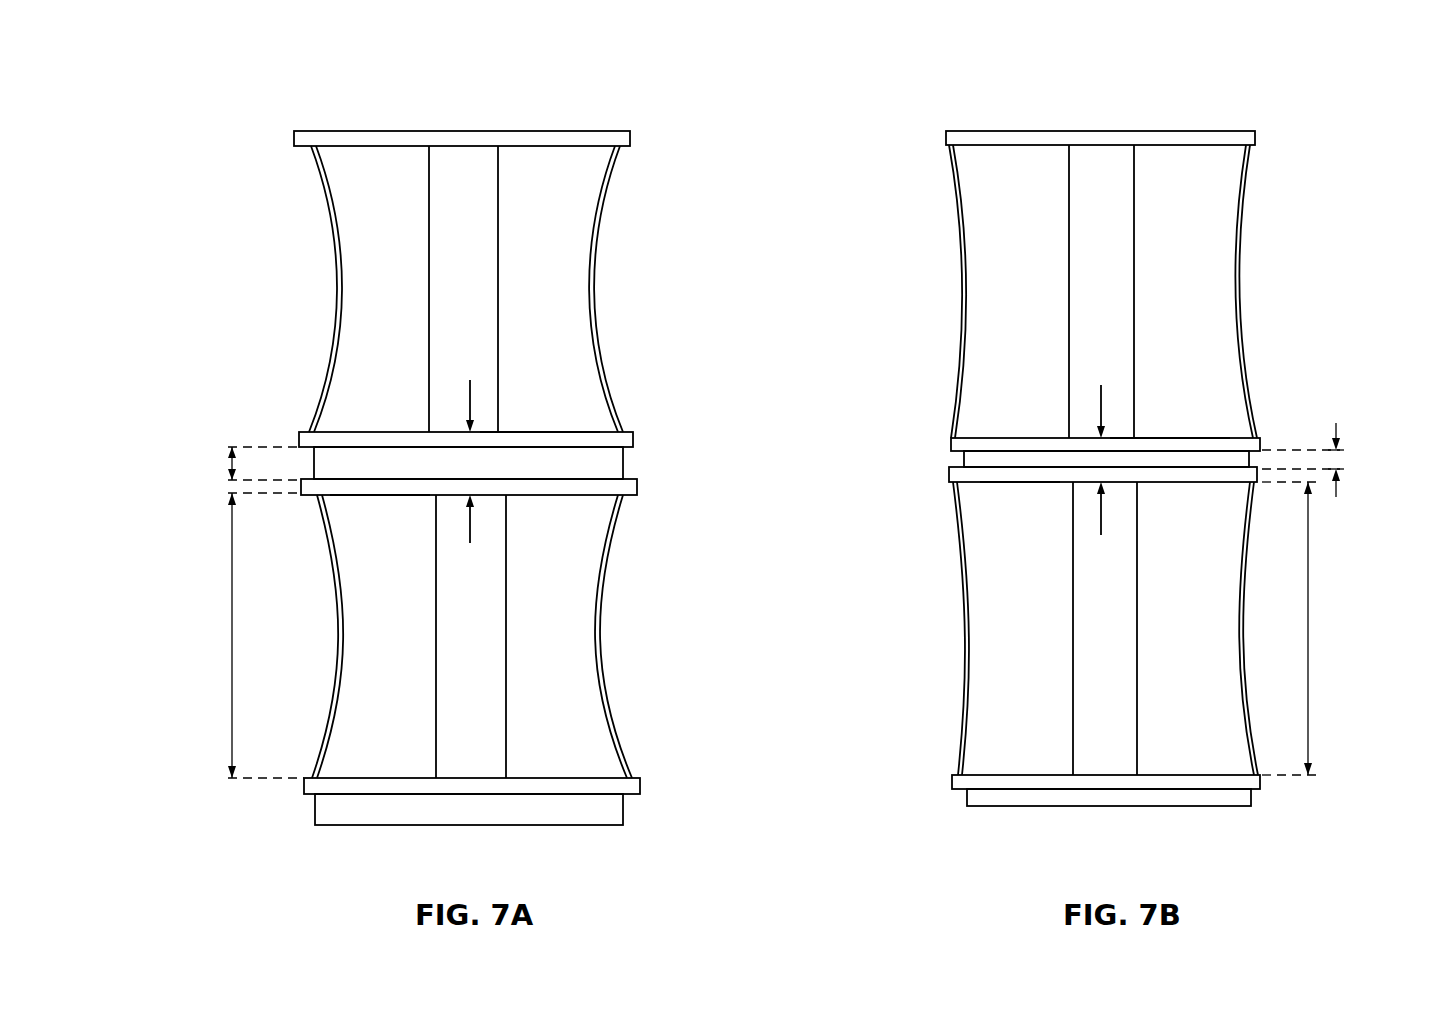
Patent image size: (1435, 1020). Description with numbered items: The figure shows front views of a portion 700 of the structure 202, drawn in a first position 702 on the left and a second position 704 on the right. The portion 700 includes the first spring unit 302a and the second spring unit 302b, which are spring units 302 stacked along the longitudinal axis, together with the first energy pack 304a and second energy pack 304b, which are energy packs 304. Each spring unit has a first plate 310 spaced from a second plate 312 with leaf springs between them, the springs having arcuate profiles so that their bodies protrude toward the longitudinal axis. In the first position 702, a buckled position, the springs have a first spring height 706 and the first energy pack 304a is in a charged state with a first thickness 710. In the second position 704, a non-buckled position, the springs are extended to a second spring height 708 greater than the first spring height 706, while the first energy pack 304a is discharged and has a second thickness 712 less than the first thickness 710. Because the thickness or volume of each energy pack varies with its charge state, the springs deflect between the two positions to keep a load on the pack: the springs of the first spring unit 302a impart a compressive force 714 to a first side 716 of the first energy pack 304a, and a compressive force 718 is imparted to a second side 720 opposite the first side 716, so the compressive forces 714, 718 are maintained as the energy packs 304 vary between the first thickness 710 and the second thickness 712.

In FIG. 7A, the structure 202 is at (484, 432).
In FIG. 7B, the structure 202 is at (1098, 435).
In FIG. 7A, the portion 700 is at (484, 432).
In FIG. 7B, the portion 700 is at (1098, 435).
In FIG. 7A, the first position 702 is at (484, 467).
In FIG. 7B, the second position 704 is at (1098, 469).
In FIG. 7A, the spring units 302 is at (475, 464).
In FIG. 7B, the spring units 302 is at (1062, 446).
In FIG. 7A, the first spring unit 302a is at (436, 464).
In FIG. 7B, the first spring unit 302a is at (1062, 446).
In FIG. 7A, the second spring unit 302b is at (567, 630).
In FIG. 7B, the second spring unit 302b is at (1017, 628).
In FIG. 7A, the energy packs 304 is at (577, 647).
In FIG. 7B, the energy packs 304 is at (1008, 609).
In FIG. 7A, the first energy pack 304a is at (625, 470).
In FIG. 7B, the first energy pack 304a is at (963, 460).
In FIG. 7A, the second energy pack 304b is at (630, 815).
In FIG. 7B, the second energy pack 304b is at (1000, 806).
In FIG. 7A, the first plates 310 is at (630, 137).
In FIG. 7B, the first plates 310 is at (1255, 138).
In FIG. 7A, the second plates 312 is at (633, 440).
In FIG. 7B, the second plates 312 is at (1105, 613).
In FIG. 7A, the first spring height 706 is at (232, 637).
In FIG. 7B, the second spring height 708 is at (1308, 645).
In FIG. 7A, the first thickness 710 is at (232, 462).
In FIG. 7B, the second thickness 712 is at (1336, 428).
In FIG. 7A, the compressive force 714 is at (466, 410).
In FIG. 7B, the compressive force 714 is at (1097, 410).
In FIG. 7A, the first side 716 is at (528, 445).
In FIG. 7B, the first side 716 is at (1175, 445).
In FIG. 7A, the compressive force 718 is at (472, 515).
In FIG. 7B, the compressive force 718 is at (1103, 505).
In FIG. 7A, the second side 720 is at (363, 482).
In FIG. 7B, the second side 720 is at (1020, 515).